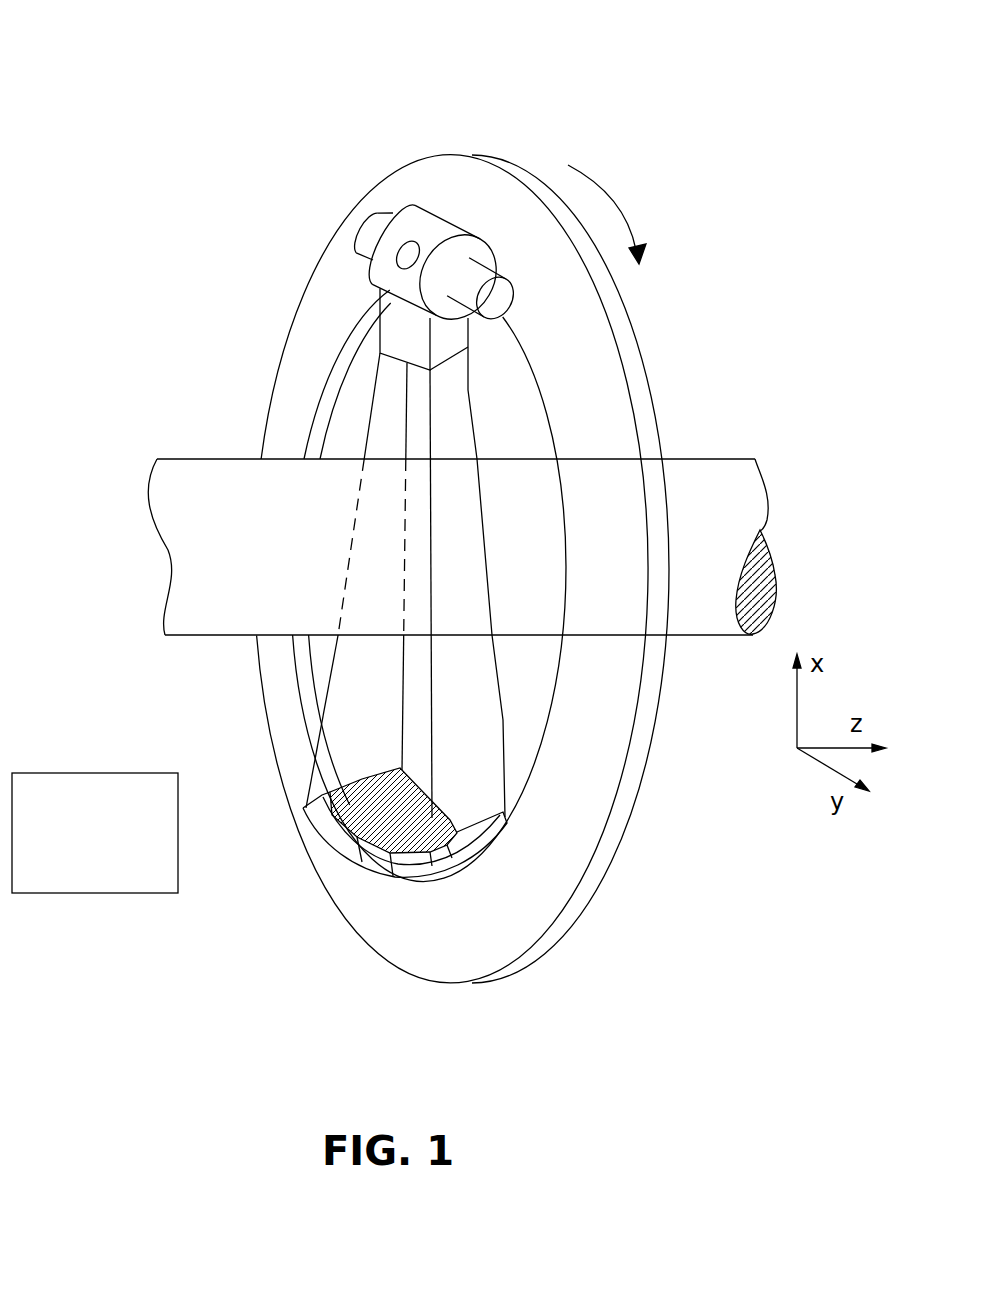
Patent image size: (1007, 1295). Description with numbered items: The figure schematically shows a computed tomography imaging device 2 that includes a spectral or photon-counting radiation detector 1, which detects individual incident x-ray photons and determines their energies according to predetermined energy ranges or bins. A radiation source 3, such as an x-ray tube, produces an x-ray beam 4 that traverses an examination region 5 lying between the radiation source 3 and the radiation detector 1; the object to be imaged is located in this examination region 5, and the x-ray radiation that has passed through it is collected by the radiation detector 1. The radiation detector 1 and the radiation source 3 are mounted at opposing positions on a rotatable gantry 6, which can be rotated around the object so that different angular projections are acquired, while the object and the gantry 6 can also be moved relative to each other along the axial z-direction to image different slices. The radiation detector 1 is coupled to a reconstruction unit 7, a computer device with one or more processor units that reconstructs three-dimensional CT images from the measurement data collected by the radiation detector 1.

The radiation detector 1 is at (410, 868).
The computed tomography imaging device 2 is at (608, 133).
The radiation source 3 is at (448, 343).
The x-ray beam 4 is at (435, 742).
The examination region 5 is at (185, 600).
The rotatable gantry 6 is at (555, 832).
The reconstruction unit 7 is at (450, 833).